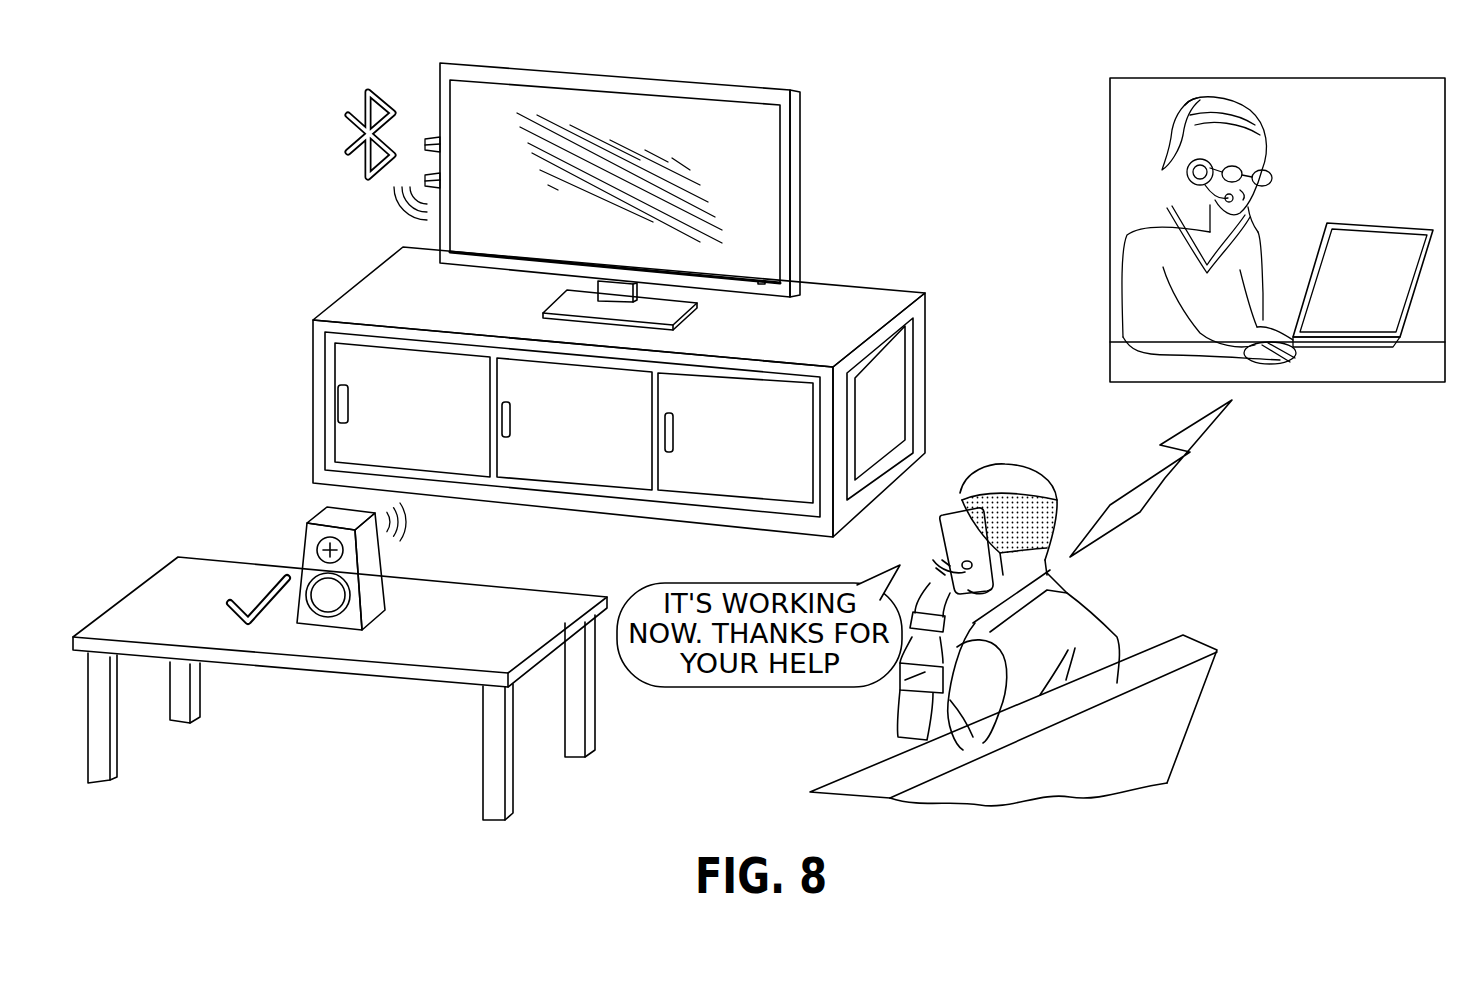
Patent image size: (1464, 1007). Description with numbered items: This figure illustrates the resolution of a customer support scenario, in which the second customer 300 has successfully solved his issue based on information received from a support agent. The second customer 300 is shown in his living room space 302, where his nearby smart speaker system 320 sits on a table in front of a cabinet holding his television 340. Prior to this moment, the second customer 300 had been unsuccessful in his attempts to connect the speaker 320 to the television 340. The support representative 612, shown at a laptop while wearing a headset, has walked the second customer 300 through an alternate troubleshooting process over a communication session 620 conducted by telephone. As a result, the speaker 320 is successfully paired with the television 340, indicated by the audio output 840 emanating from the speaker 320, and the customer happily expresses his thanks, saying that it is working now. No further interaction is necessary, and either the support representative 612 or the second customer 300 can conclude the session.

The living room space 302 is at (914, 86).
The television 340 is at (800, 193).
The smart speaker system 320 is at (305, 547).
The audio output from speaker 840 is at (427, 520).
The support representative 612 is at (1296, 150).
The communication link 620 is at (1165, 478).
The second customer 300 is at (1122, 563).